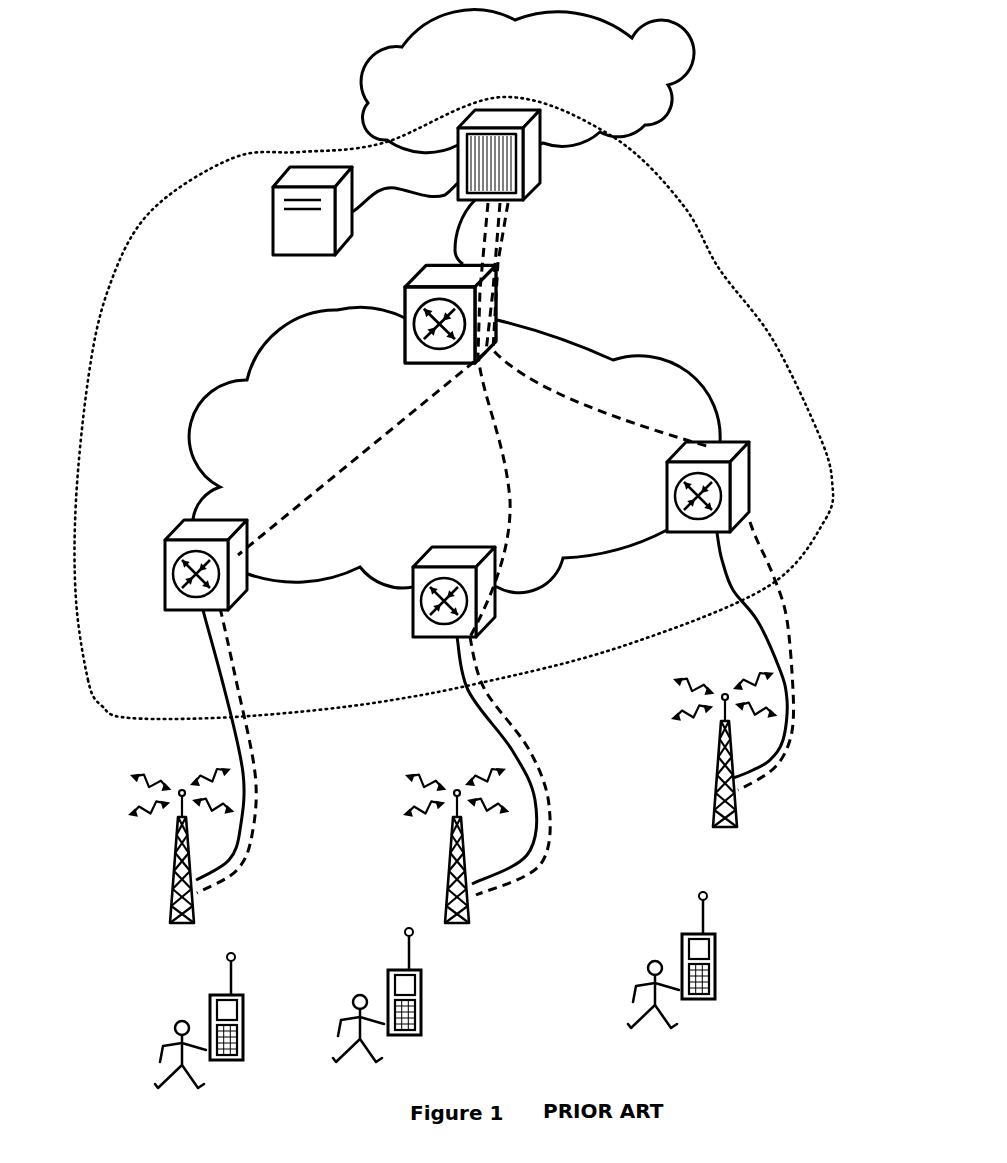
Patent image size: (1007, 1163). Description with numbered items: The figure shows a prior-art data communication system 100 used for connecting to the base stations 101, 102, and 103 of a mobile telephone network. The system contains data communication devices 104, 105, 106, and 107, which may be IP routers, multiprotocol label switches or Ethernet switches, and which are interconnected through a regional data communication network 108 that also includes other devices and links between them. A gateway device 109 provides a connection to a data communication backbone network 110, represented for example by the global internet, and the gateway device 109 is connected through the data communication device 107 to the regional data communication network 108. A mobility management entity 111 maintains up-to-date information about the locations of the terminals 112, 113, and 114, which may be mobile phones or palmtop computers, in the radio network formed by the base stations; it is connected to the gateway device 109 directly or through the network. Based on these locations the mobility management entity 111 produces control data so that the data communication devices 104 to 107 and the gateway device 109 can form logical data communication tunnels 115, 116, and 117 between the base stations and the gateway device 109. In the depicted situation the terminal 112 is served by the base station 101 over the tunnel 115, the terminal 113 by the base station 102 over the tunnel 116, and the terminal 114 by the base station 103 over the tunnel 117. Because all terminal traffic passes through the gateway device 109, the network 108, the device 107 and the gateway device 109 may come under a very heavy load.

The data communication system 100 is at (684, 208).
The base station 101 is at (195, 903).
The base station 102 is at (470, 903).
The base station 103 is at (713, 817).
The data communication device 104 is at (176, 611).
The data communication device 105 is at (413, 618).
The data communication device 106 is at (733, 442).
The data communication device 107 is at (404, 298).
The regional data communication network 108 is at (575, 335).
The gateway device 109 is at (541, 163).
The data communication backbone network 110 is at (355, 72).
The mobility management entity 111 is at (273, 210).
The terminal 112 is at (243, 1017).
The terminal 113 is at (422, 1010).
The terminal 114 is at (715, 968).
The logical data communication tunnel 115 is at (348, 460).
The logical data communication tunnel 116 is at (508, 532).
The logical data communication tunnel 117 is at (617, 411).